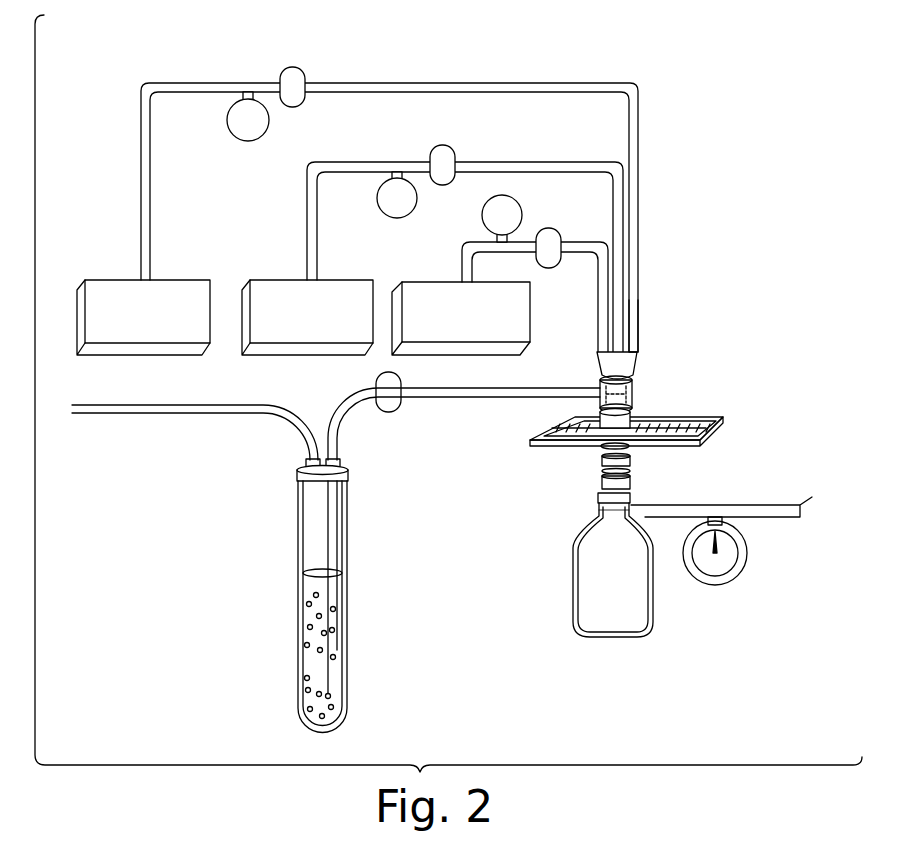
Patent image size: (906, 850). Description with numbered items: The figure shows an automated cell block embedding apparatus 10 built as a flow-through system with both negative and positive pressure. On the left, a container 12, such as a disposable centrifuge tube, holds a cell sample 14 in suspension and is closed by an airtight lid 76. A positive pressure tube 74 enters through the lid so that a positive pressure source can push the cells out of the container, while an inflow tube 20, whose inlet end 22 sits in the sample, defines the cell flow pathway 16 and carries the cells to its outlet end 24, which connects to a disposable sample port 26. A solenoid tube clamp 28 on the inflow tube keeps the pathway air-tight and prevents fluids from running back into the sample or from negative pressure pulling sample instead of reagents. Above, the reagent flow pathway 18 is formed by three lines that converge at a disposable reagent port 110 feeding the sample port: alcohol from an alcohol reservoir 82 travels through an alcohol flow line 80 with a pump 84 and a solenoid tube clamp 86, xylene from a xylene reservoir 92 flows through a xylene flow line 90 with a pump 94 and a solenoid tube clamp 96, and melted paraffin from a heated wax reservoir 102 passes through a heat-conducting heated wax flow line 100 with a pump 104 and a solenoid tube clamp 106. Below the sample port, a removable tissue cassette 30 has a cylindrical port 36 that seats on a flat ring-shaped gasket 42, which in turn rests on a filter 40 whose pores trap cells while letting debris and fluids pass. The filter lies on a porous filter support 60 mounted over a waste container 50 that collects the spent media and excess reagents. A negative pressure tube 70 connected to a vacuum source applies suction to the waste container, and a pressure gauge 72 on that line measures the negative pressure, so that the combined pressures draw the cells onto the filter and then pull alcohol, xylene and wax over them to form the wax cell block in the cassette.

The cell block embedding apparatus 10 is at (749, 147).
The container 12 is at (304, 548).
The cell sample 14 is at (333, 657).
The cell flow pathway 16 is at (352, 450).
The reagent flow pathway 18 is at (658, 174).
The inflow tube 20 is at (407, 400).
The inlet end 22 is at (320, 702).
The outlet end 24 is at (600, 396).
The sample port 26 is at (643, 391).
The solenoid tube clamp 28 is at (388, 414).
The tissue cassette 30 is at (722, 440).
The cylindrical port 36 is at (635, 418).
The filter 40 is at (632, 480).
The gasket 42 is at (600, 458).
The waste container 50 is at (638, 606).
The filter support 60 is at (596, 503).
The negative pressure tube 70 is at (737, 493).
The pressure gauge 72 is at (732, 566).
The positive pressure tube 74 is at (222, 413).
The airtight lid 76 is at (297, 475).
The alcohol flow line 80 is at (150, 154).
The alcohol reservoir 82 is at (112, 278).
The pump 84 is at (227, 120).
The solenoid tube clamp 86 is at (300, 82).
The xylene flow line 90 is at (307, 200).
The xylene reservoir 92 is at (272, 278).
The pump 94 is at (381, 212).
The solenoid tube clamp 96 is at (432, 158).
The heated wax flow line 100 is at (598, 356).
The heated wax reservoir 102 is at (425, 281).
The pump 104 is at (483, 210).
The solenoid tube clamp 106 is at (538, 255).
The reagent port 110 is at (640, 312).